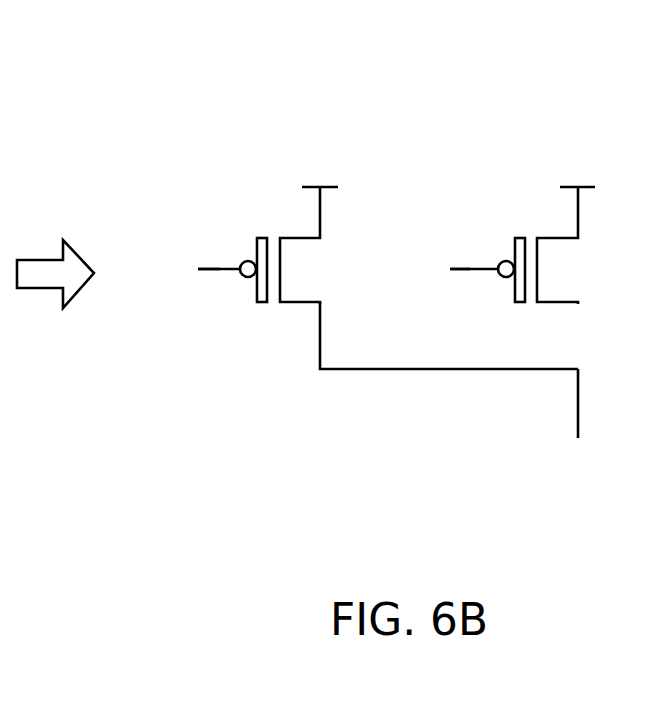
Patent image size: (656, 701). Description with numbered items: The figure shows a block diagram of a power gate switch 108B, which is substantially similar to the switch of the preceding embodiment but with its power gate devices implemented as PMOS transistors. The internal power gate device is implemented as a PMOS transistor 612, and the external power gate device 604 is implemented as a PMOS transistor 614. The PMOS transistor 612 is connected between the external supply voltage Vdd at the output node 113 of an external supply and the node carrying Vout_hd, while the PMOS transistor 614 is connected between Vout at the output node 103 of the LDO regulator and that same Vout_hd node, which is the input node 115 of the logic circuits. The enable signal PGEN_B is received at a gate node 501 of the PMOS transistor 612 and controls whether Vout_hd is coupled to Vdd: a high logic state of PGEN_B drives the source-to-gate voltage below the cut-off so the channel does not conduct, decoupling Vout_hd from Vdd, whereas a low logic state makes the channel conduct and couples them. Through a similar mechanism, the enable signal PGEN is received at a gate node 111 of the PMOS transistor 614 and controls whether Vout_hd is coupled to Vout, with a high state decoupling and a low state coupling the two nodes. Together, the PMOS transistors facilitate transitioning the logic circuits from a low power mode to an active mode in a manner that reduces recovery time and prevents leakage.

The power gate switch 108B is at (166, 80).
The external power gate device 604 is at (47, 239).
The PMOS transistor 612 is at (312, 265).
The PMOS transistor 614 is at (573, 272).
The output node of external supply 113 is at (318, 151).
The output node of LDO regulator 103 is at (577, 151).
The gate node 501 is at (171, 266).
The gate node 111 is at (465, 270).
The input node of logic circuits 115 is at (567, 444).